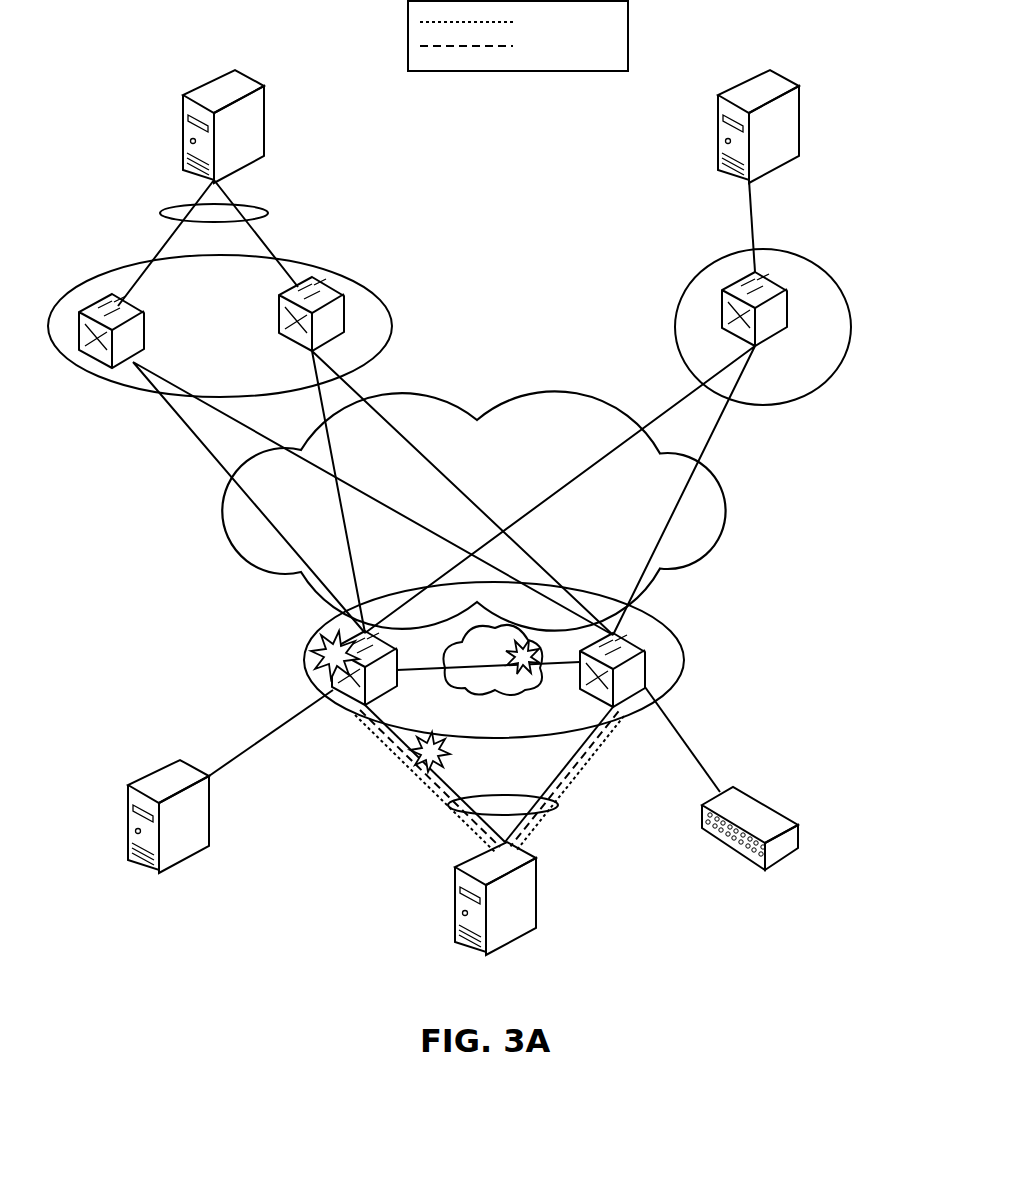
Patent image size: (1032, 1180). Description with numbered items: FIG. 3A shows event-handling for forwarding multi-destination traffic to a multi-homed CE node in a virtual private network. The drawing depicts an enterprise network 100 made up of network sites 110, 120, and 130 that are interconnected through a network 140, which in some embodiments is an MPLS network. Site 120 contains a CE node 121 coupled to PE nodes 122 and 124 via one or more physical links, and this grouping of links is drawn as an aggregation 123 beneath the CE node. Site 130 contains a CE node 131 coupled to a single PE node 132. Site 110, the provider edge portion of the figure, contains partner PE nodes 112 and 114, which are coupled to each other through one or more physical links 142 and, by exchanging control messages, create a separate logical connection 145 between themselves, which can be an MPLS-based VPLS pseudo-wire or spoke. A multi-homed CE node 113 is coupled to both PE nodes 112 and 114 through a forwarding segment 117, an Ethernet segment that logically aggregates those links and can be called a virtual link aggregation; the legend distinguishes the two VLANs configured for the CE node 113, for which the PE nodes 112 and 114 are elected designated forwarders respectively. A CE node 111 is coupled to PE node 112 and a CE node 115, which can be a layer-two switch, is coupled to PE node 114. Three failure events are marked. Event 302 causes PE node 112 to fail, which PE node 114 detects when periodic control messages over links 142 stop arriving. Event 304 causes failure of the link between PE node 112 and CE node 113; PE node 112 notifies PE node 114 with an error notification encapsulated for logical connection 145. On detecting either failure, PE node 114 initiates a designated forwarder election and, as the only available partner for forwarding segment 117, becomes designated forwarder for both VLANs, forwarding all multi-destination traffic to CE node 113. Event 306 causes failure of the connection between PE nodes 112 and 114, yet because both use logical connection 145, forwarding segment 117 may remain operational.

The enterprise network 100 is at (836, 48).
The network site 110 is at (684, 665).
The CE node 111 is at (165, 762).
The PE node 112 is at (402, 678).
The multi-homed CE node 113 is at (455, 880).
The PE node 114 is at (580, 666).
The CE node 115 is at (770, 800).
The forwarding segment 117 is at (558, 808).
The network site 120 is at (392, 312).
The CE node 121 is at (264, 100).
The PE node 122 is at (143, 318).
The link aggregation group 123 is at (268, 212).
The PE node 124 is at (280, 322).
The network site 130 is at (851, 320).
The CE node 131 is at (799, 110).
The PE node 132 is at (788, 305).
The network 140 is at (735, 507).
The physical links 142 is at (407, 665).
The logical connection 145 is at (476, 640).
The event 302 is at (312, 652).
The event 304 is at (412, 750).
The event 306 is at (532, 645).